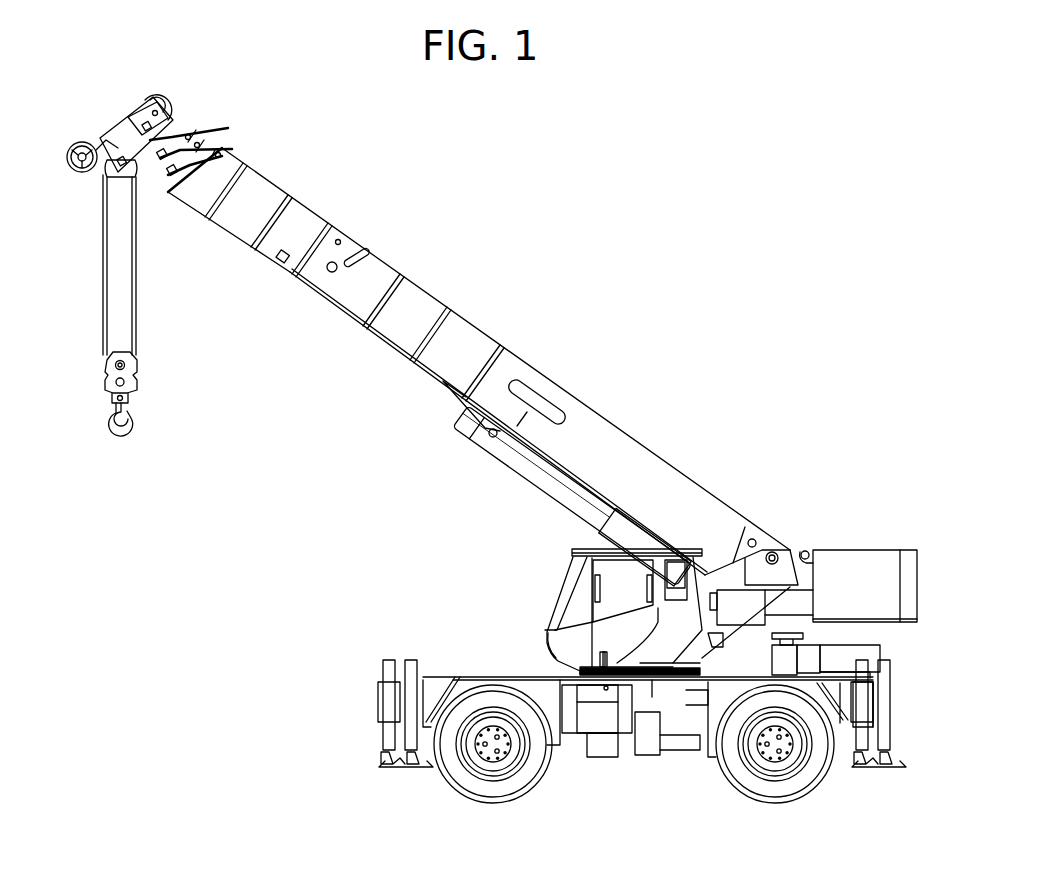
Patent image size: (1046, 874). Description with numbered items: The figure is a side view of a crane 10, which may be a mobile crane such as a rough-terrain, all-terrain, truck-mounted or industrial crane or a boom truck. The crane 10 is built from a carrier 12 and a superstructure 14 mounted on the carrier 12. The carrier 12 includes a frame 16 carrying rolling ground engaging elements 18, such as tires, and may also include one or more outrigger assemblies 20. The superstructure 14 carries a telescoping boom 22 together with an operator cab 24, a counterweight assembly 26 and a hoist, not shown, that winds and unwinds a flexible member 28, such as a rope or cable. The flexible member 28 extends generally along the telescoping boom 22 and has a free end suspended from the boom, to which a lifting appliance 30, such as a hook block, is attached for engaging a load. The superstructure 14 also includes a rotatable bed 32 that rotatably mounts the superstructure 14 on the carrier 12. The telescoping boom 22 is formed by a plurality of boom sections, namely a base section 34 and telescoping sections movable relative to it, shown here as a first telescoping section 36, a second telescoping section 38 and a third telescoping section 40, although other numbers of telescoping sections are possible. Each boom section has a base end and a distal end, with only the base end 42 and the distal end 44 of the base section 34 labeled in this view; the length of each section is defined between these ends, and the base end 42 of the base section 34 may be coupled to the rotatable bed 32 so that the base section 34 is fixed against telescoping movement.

The crane 10 is at (730, 323).
The carrier 12 is at (628, 765).
The superstructure 14 is at (795, 543).
The frame 16 is at (510, 677).
The rolling ground engaging elements 18 is at (800, 782).
The outrigger assemblies 20 is at (392, 737).
The telescoping boom 22 is at (405, 287).
The operator cab 24 is at (570, 556).
The counterweight assembly 26 is at (890, 593).
The flexible member 28 is at (102, 270).
The lifting appliance 30 is at (110, 407).
The rotatable bed 32 is at (558, 642).
The base section 34 is at (603, 448).
The first telescoping section 36 is at (137, 115).
The second telescoping section 38 is at (186, 126).
The third telescoping section 40 is at (205, 145).
The base end 42 is at (757, 536).
The distal end 44 is at (188, 168).